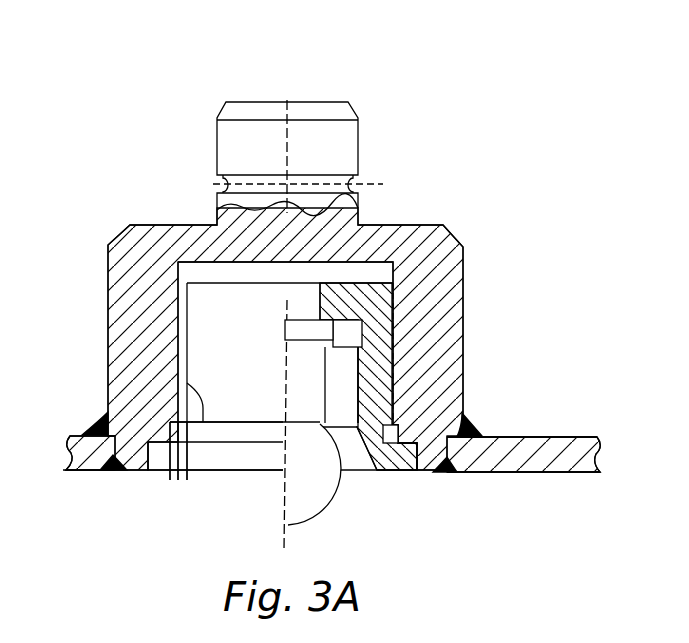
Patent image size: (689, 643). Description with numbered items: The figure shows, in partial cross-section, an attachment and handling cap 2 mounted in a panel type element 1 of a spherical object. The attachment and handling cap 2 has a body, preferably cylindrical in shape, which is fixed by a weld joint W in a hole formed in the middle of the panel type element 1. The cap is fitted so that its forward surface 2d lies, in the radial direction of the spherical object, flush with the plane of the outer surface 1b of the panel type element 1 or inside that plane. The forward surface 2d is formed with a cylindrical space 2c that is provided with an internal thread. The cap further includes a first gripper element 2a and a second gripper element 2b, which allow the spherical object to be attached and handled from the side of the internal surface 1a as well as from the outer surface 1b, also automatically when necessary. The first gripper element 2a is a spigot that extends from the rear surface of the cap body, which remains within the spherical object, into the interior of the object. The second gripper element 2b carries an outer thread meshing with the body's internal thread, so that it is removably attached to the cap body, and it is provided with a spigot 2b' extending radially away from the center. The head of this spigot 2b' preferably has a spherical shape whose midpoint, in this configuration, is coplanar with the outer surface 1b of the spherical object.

The panel type element 1 is at (577, 447).
The internal surface 1a is at (537, 437).
The outer surface 1b is at (508, 473).
The attachment and handling cap 2 is at (172, 140).
The first gripper element 2a is at (347, 148).
The second gripper element 2b is at (321, 415).
The spigot 2b' is at (366, 478).
The cylindrical space 2c is at (193, 475).
The forward surface 2d is at (142, 472).
The weld joint W is at (92, 418).